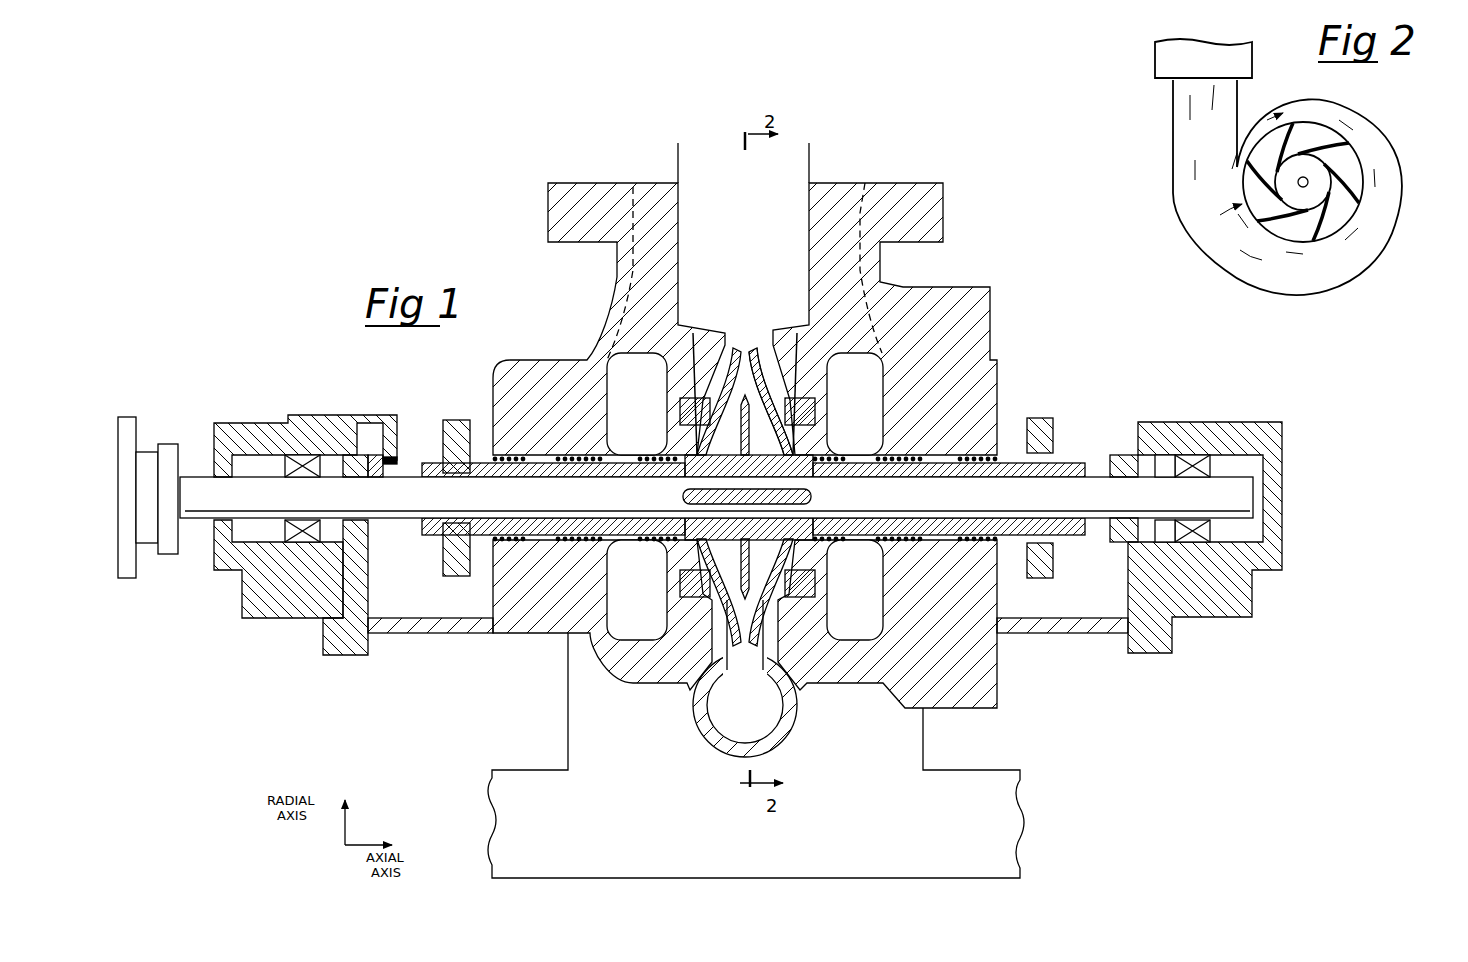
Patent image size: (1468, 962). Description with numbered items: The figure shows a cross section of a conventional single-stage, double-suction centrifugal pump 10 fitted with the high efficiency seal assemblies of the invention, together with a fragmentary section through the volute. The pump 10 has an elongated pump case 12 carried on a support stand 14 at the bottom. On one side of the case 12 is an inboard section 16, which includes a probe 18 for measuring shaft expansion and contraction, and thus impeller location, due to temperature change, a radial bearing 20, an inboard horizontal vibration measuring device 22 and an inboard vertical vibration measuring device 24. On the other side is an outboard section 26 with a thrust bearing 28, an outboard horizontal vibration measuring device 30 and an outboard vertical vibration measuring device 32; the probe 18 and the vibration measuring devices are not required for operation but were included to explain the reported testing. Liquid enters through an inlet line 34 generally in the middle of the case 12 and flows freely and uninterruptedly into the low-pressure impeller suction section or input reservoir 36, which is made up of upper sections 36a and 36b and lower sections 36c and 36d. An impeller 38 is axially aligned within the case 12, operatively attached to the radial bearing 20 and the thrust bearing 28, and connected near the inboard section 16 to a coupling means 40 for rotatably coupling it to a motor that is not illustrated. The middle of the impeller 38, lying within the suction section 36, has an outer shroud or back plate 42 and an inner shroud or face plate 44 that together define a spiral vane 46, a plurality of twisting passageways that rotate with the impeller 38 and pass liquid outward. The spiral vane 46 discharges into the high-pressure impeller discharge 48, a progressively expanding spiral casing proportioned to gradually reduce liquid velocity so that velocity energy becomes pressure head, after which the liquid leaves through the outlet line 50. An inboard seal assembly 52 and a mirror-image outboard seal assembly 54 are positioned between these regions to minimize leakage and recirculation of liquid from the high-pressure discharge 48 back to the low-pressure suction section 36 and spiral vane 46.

In FIG. 1, the double-suction centrifugal pump 10 is at (362, 706).
In FIG. 1, the pump case 12 is at (520, 640).
In FIG. 1, the support stand 14 is at (525, 770).
In FIG. 1, the inboard section 16 is at (240, 608).
In FIG. 1, the probe 18 is at (400, 456).
In FIG. 1, the radial bearing 20 is at (303, 545).
In FIG. 1, the inboard horizontal vibration measuring device 22 is at (275, 567).
In FIG. 1, the inboard vertical vibration measuring device 24 is at (268, 423).
In FIG. 1, the outboard section 26 is at (1234, 516).
In FIG. 1, the thrust bearing 28 is at (1190, 548).
In FIG. 1, the outboard horizontal vibration measuring device 30 is at (1215, 558).
In FIG. 1, the outboard vertical vibration measuring device 32 is at (1233, 422).
In FIG. 1, the inlet line 34 is at (863, 180).
In FIG. 1, the low-pressure impeller suction section 36 is at (819, 509).
In FIG. 1, the upper section 36a is at (650, 394).
In FIG. 1, the upper section 36b is at (869, 389).
In FIG. 1, the lower section 36c is at (869, 629).
In FIG. 1, the lower section 36d is at (650, 622).
In FIG. 1, the impeller 38 is at (1245, 492).
In FIG. 2, the impeller 38 is at (1308, 180).
In FIG. 1, the coupling means 40 is at (172, 444).
In FIG. 1, the outer shroud 42 is at (750, 348).
In FIG. 1, the inner shroud 44 is at (802, 436).
In FIG. 1, the spiral vane 46 is at (812, 430).
In FIG. 2, the spiral vane 46 is at (1363, 165).
In FIG. 1, the high-pressure impeller discharge 48 is at (735, 708).
In FIG. 2, the high-pressure impeller discharge 48 is at (1385, 228).
In FIG. 1, the outlet line 50 is at (811, 152).
In FIG. 2, the outlet line 50 is at (1252, 62).
In FIG. 1, the inboard seal assembly 52 is at (690, 395).
In FIG. 1, the outboard seal assembly 54 is at (796, 395).